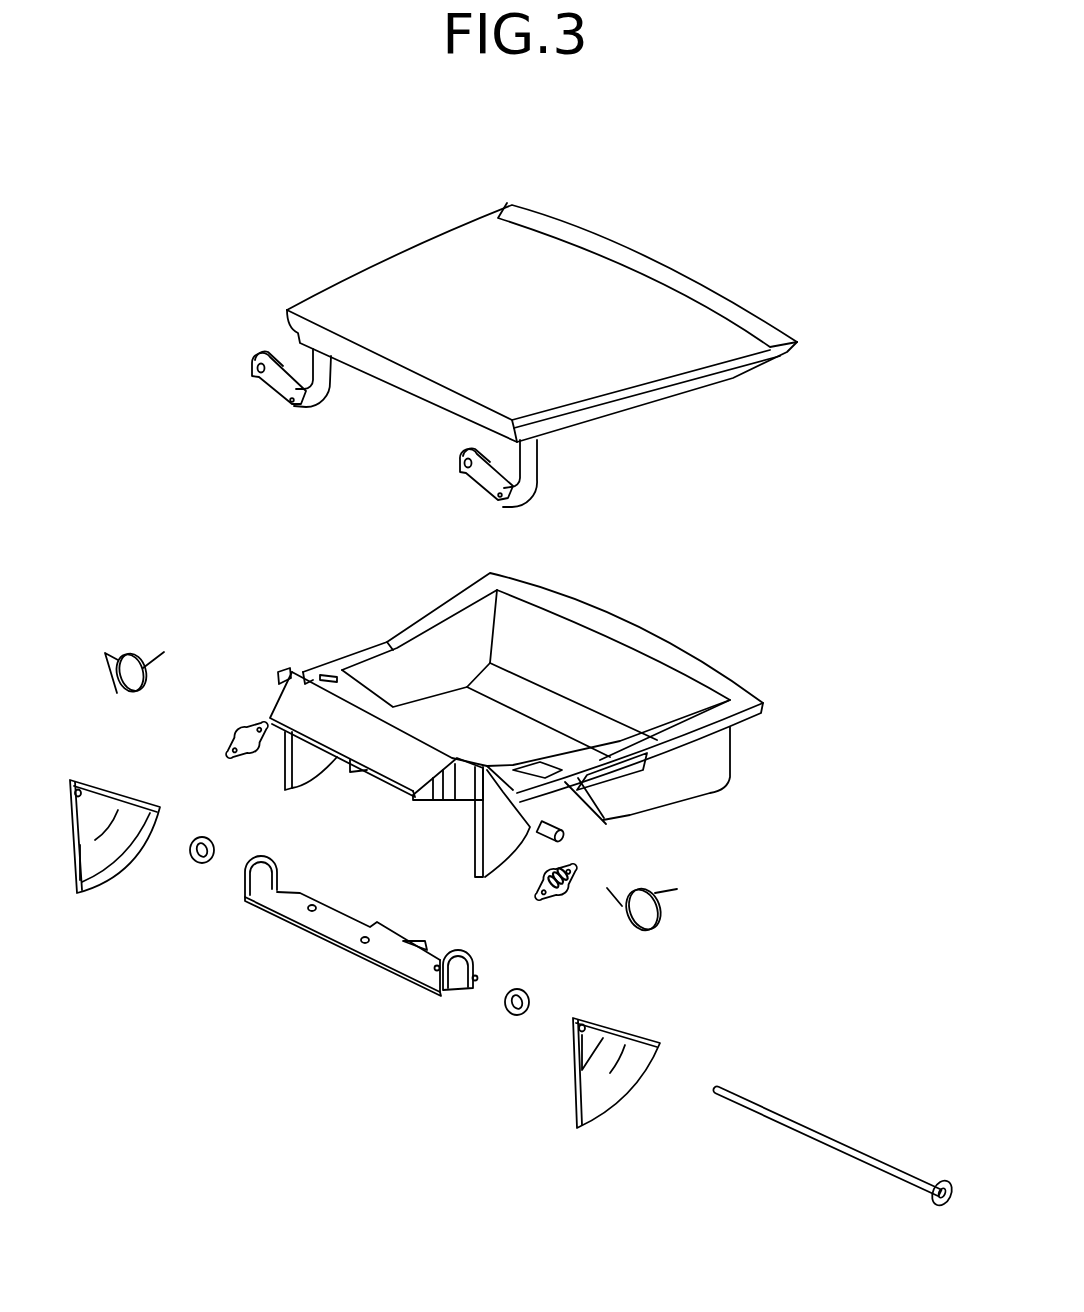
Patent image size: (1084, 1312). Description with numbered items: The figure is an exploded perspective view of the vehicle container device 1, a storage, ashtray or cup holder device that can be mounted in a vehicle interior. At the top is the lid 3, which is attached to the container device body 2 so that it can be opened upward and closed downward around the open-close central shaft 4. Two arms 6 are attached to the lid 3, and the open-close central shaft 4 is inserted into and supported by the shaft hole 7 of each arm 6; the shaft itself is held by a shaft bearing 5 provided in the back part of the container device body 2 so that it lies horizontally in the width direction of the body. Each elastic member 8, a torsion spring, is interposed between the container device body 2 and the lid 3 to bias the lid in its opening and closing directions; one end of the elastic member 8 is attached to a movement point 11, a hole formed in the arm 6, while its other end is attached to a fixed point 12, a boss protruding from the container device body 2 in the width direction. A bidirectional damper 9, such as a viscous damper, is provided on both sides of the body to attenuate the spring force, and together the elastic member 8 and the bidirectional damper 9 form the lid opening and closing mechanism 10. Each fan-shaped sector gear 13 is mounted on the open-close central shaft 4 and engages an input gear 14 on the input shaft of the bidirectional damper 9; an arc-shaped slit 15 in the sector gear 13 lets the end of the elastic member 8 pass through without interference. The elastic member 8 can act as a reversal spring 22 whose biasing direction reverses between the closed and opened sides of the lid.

The vehicle container device 1 is at (774, 233).
The container device body 2 is at (713, 635).
The lid 3 is at (668, 242).
The open-close central shaft 4 is at (831, 1137).
The shaft bearing 5 is at (362, 788).
The arm 6 is at (317, 398).
The shaft hole 7 is at (252, 371).
The elastic member 8 is at (128, 694).
The bidirectional damper 9 is at (252, 722).
The lid opening and closing mechanism 10 is at (698, 884).
The movement point 11 is at (290, 401).
The fixed point 12 is at (566, 833).
The sector gear 13 is at (93, 894).
The input gear 14 is at (560, 898).
The slit 15 is at (632, 1040).
The reversal spring 22 is at (656, 924).